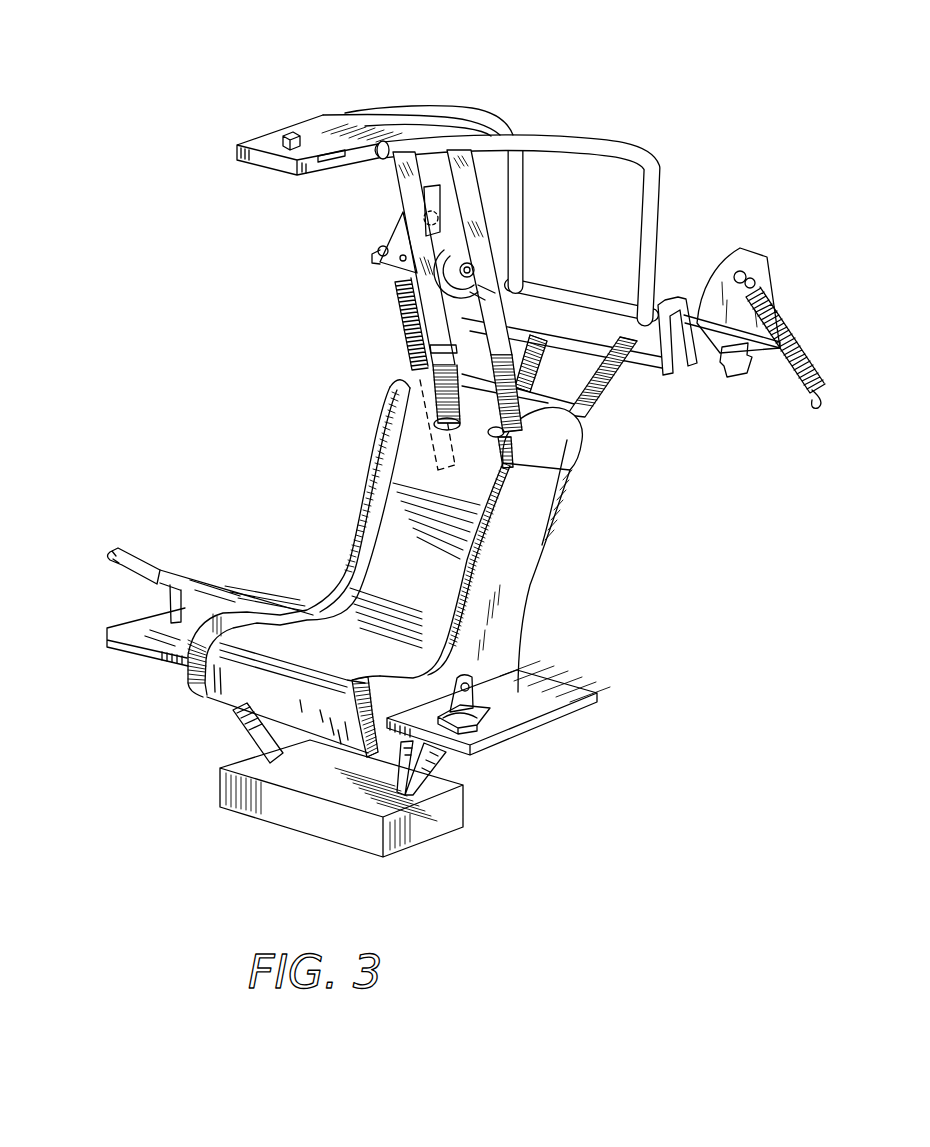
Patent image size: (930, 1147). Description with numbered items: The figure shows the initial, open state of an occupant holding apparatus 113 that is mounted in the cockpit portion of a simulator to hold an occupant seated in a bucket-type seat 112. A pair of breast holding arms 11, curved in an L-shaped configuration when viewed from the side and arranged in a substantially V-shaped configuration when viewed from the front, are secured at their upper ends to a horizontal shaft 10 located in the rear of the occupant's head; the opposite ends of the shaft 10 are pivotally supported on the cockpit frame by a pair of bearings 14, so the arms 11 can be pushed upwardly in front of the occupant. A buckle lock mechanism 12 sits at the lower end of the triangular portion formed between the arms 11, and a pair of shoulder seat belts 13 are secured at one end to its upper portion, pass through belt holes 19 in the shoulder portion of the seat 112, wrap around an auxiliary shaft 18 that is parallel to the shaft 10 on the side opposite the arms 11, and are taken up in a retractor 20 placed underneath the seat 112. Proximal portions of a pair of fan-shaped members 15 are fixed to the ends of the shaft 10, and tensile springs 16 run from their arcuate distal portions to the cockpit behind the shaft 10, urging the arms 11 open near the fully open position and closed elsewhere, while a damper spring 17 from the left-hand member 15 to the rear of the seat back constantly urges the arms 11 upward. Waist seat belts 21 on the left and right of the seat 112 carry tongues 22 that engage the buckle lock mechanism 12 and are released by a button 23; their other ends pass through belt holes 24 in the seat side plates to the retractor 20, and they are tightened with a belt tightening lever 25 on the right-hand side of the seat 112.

The occupant holding apparatus 113 is at (222, 150).
The shaft 10 is at (543, 290).
The breast holding arms 11 is at (532, 137).
The buckle lock mechanism 12 is at (331, 127).
The seat belts 13 is at (437, 362).
The bearings 14 is at (491, 357).
The fan-shaped members 15 is at (395, 240).
The tensile springs 16 is at (455, 223).
The damper spring 17 is at (400, 313).
The auxiliary shaft 18 is at (567, 330).
The belt holes 19 is at (495, 437).
The retractor 20 is at (307, 817).
The seat belts 21 is at (247, 727).
The tongues 22 is at (473, 690).
The button 23 is at (293, 133).
The belt holes 24 is at (487, 717).
The belt tightening lever 25 is at (177, 575).
The seat 112 is at (520, 578).